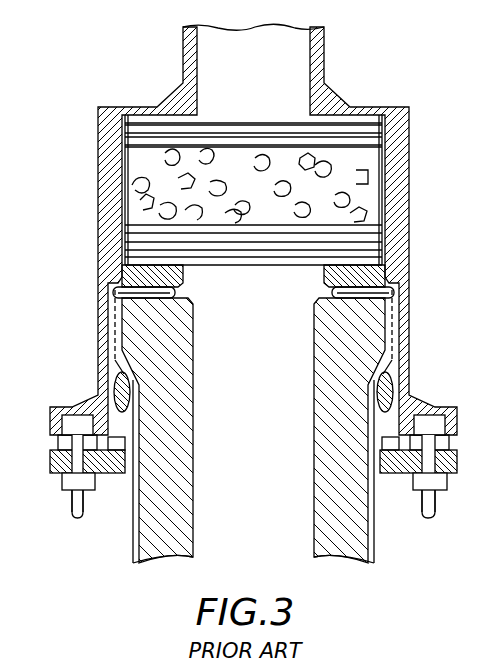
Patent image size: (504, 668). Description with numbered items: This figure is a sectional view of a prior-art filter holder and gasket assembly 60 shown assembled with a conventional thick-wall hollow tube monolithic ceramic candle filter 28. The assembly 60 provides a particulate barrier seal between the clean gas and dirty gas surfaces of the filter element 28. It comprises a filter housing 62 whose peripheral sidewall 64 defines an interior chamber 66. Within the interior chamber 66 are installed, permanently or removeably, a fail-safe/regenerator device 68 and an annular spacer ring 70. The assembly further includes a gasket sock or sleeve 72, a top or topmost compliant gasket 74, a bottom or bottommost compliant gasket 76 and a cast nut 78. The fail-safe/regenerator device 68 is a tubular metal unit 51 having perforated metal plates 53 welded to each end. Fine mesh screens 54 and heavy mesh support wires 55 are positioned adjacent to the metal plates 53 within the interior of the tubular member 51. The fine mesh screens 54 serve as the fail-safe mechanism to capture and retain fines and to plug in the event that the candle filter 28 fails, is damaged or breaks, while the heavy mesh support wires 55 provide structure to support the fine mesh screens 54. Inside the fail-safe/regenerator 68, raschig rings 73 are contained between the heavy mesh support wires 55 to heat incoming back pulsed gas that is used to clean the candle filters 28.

The candle filter 28 is at (353, 523).
The tubular metal unit 51 is at (110, 236).
The perforated metal plates 53 is at (124, 118).
The fine mesh screens 54 is at (124, 126).
The heavy mesh support wires 55 is at (124, 134).
The filter holder and gasket assembly 60 is at (253, 271).
The filter housing 62 is at (98, 216).
The peripheral sidewall 64 is at (99, 162).
The interior chamber 66 is at (138, 183).
The fail-safe/regenerator device 68 is at (390, 154).
The annular spacer ring 70 is at (402, 257).
The gasket sock or sleeve 72 is at (397, 329).
The raschig rings 73 is at (350, 158).
The top compliant gasket 74 is at (404, 297).
The bottom compliant gasket 76 is at (390, 382).
The cast nut 78 is at (384, 426).